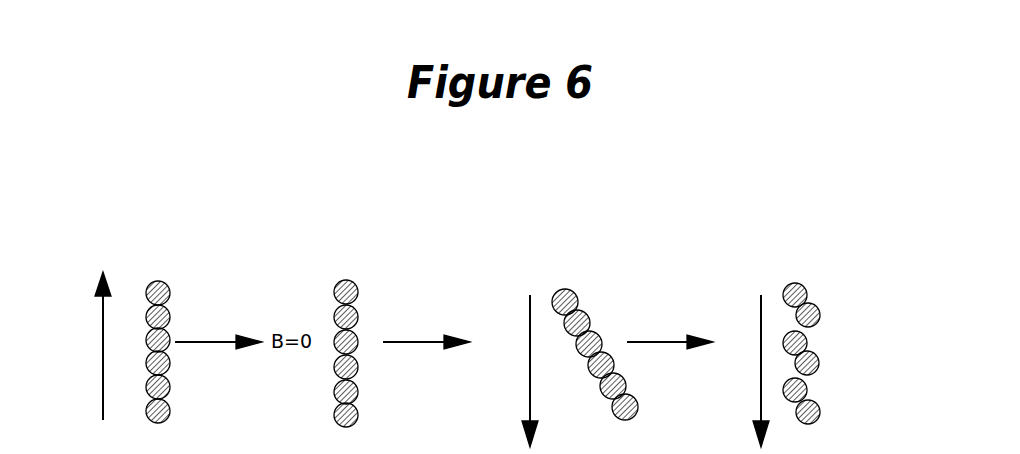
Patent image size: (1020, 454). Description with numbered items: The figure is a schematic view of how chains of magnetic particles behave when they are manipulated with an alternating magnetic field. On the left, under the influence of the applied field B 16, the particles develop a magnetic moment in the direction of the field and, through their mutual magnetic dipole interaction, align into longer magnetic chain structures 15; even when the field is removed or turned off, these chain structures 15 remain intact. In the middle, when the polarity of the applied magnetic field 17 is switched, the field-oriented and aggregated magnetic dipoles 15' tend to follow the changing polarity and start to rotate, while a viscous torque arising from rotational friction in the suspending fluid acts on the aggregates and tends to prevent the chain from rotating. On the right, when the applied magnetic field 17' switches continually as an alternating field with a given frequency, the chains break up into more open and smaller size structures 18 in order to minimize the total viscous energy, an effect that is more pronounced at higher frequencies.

The magnetic chain structures 15 is at (252, 309).
The applied field B 16 is at (99, 266).
The applied magnetic field 17 is at (517, 312).
The field-oriented and aggregated magnetic dipoles 15' is at (608, 330).
The applied magnetic field 17' is at (752, 307).
The open and smaller size structures 18 is at (825, 357).